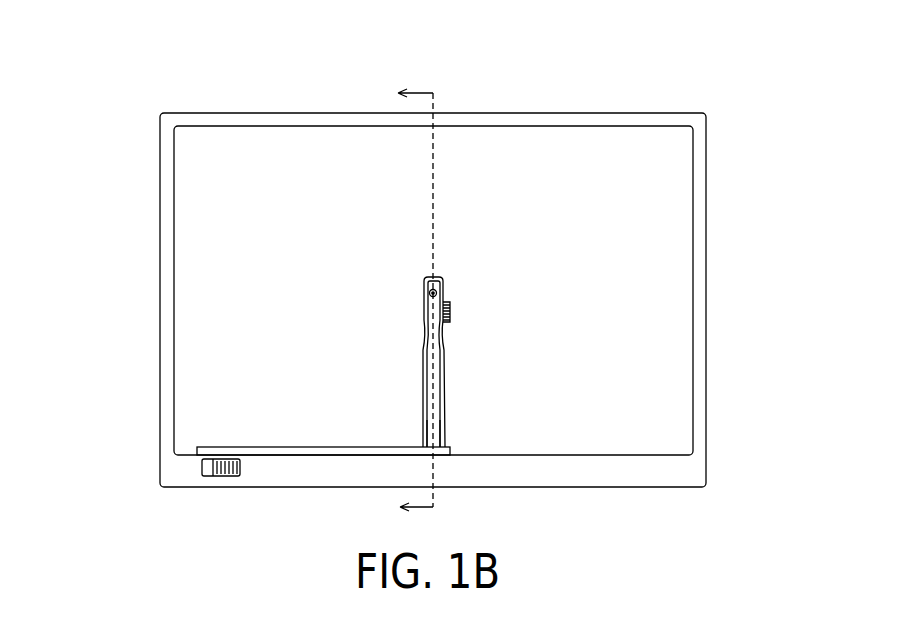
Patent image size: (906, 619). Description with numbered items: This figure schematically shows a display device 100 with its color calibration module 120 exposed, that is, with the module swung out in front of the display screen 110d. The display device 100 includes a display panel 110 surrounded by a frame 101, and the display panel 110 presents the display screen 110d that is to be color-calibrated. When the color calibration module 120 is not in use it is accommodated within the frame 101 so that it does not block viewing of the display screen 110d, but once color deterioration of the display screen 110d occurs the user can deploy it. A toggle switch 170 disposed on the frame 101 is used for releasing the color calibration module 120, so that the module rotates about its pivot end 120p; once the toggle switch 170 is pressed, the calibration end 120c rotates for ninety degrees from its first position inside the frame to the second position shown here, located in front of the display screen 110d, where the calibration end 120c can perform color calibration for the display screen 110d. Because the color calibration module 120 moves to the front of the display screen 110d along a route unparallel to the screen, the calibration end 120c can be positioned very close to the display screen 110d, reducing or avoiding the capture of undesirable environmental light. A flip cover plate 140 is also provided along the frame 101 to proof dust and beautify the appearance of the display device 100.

The display device 100 is at (113, 67).
The display panel 110 is at (700, 97).
The frame 101 is at (475, 290).
The display screen 110d is at (662, 317).
The color calibration module 120 is at (480, 299).
The calibration end 120c is at (445, 285).
The pivot end 120p is at (457, 470).
The flip cover plate 140 is at (197, 450).
The toggle switch 170 is at (218, 476).